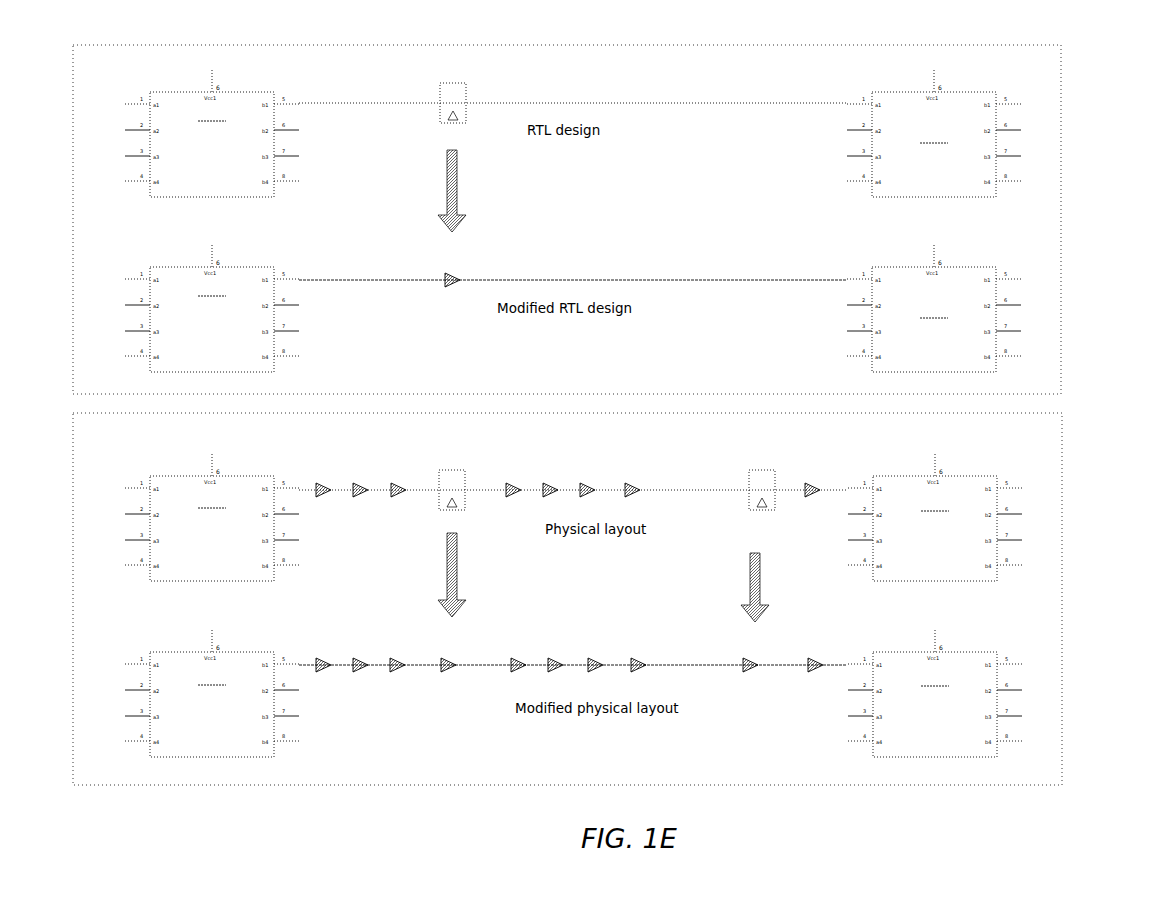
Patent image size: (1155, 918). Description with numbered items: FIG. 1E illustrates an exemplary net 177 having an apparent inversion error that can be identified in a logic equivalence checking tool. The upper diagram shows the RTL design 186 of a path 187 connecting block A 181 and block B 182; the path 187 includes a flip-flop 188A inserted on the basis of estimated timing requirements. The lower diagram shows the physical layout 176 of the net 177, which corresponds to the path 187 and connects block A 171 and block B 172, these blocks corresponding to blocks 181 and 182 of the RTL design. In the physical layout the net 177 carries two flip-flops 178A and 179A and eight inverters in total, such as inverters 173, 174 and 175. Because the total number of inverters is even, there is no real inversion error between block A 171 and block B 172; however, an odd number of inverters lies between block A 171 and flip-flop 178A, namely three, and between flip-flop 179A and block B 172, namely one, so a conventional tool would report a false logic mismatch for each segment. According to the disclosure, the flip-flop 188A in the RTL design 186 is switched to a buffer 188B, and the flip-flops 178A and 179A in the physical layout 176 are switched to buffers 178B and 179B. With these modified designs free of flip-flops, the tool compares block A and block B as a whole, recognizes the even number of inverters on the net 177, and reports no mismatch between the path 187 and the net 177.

The block A 171 is at (212, 605).
The block B 172 is at (935, 605).
The inverter 173 is at (325, 485).
The inverter 174 is at (636, 488).
The inverter 175 is at (812, 496).
The physical layout 176 is at (1062, 490).
The net 177 is at (688, 490).
The flip-flop 178A is at (458, 470).
The buffer 178B is at (452, 660).
The flip-flop 179A is at (766, 470).
The buffer 179B is at (752, 660).
The block A 181 is at (212, 221).
The block B 182 is at (934, 221).
The RTL design 186 is at (1061, 153).
The path 187 is at (604, 103).
The flip-flop 188A is at (458, 83).
The buffer 188B is at (462, 280).